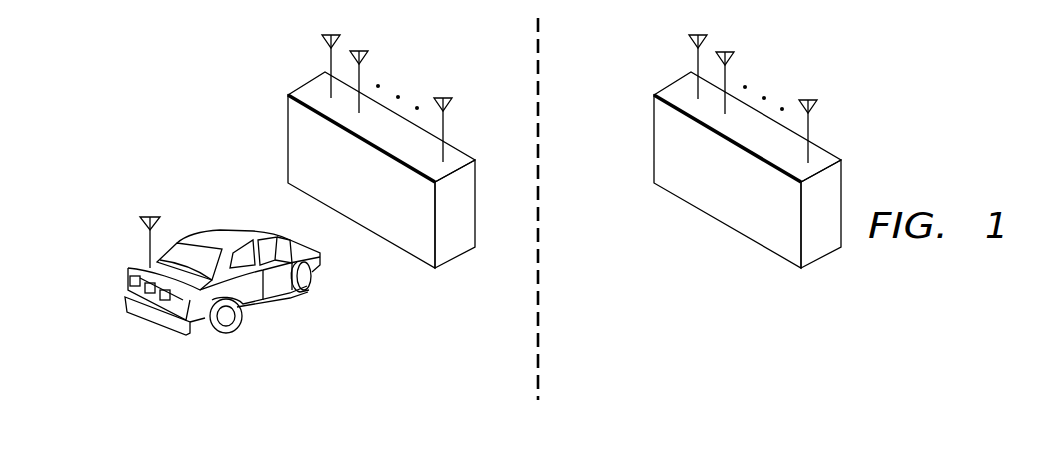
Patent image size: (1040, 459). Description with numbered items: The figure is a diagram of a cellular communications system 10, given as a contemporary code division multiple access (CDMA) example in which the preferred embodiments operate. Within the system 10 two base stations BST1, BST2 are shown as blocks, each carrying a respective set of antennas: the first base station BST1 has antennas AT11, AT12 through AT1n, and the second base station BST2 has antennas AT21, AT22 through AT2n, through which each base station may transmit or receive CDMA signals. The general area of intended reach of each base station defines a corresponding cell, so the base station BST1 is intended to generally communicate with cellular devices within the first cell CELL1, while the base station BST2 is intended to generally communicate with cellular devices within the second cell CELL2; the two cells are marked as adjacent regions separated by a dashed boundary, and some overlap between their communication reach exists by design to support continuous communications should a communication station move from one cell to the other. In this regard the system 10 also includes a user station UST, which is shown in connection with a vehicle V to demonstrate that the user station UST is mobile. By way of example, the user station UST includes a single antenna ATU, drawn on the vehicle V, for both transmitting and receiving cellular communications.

The cellular communications system 10 is at (196, 90).
The base station BST1 is at (381, 170).
The base station BST2 is at (747, 170).
The antenna AT11 is at (328, 63).
The antenna AT12 is at (362, 70).
The antenna AT1n is at (447, 120).
The antenna AT21 is at (695, 63).
The antenna AT22 is at (729, 71).
The antenna AT2n is at (813, 121).
The antenna ATU is at (147, 244).
The user station UST is at (191, 270).
The vehicle V is at (226, 233).
The cell CELL1 is at (533, 408).
The cell CELL2 is at (908, 397).